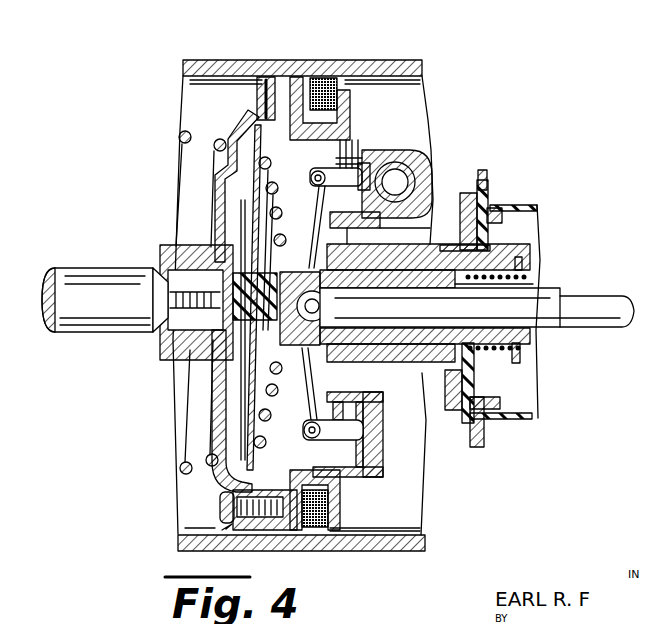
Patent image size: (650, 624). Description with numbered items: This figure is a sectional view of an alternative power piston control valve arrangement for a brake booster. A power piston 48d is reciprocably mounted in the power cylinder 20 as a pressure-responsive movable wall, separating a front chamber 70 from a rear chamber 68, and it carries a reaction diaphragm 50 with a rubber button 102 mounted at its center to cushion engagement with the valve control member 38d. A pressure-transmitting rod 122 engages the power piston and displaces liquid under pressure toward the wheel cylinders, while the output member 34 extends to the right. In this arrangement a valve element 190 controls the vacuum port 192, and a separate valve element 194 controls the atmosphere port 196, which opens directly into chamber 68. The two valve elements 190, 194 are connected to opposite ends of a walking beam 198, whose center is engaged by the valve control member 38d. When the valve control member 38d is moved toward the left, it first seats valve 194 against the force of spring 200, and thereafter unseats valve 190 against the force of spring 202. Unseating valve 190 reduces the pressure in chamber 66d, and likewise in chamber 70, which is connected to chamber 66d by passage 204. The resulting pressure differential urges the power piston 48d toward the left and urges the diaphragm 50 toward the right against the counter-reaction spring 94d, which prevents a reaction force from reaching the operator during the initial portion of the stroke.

The power cylinder 20 is at (362, 72).
The output shaft 34 is at (545, 307).
The valve control member 38d is at (423, 368).
The power piston 48d is at (185, 540).
The reaction diaphragm 50 is at (247, 373).
The rear compartment 66d is at (297, 462).
The chamber 68 is at (386, 546).
The chamber 70 is at (240, 93).
The counter-reaction spring 94d is at (260, 418).
The rubber button 102 is at (167, 361).
The rod 122 is at (65, 332).
The valve element 190 is at (378, 150).
The vacuum port 192 is at (398, 177).
The valve element 194 is at (374, 446).
The atmosphere port 196 is at (350, 477).
The walking beam 198 is at (358, 231).
The spring 200 is at (366, 393).
The spring 202 is at (350, 153).
The passage 204 is at (283, 93).